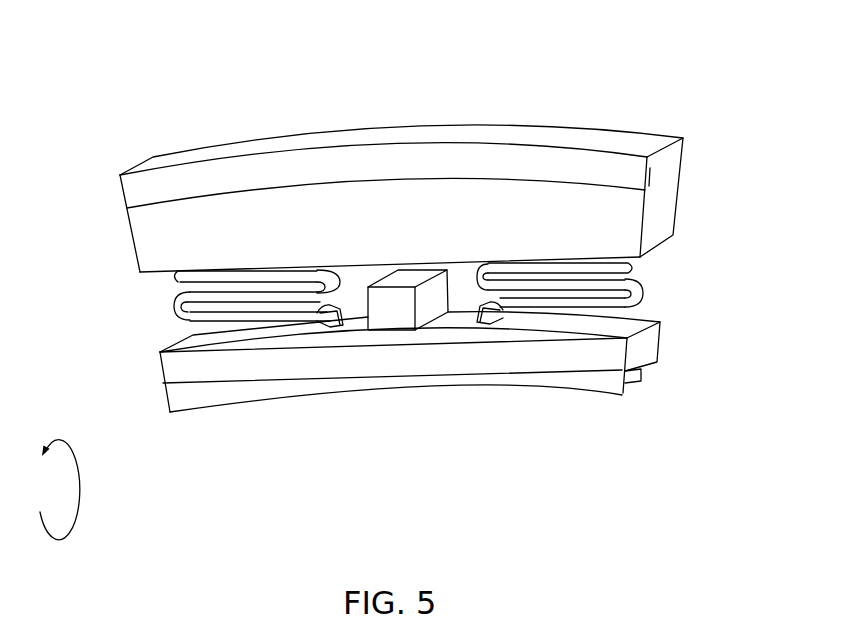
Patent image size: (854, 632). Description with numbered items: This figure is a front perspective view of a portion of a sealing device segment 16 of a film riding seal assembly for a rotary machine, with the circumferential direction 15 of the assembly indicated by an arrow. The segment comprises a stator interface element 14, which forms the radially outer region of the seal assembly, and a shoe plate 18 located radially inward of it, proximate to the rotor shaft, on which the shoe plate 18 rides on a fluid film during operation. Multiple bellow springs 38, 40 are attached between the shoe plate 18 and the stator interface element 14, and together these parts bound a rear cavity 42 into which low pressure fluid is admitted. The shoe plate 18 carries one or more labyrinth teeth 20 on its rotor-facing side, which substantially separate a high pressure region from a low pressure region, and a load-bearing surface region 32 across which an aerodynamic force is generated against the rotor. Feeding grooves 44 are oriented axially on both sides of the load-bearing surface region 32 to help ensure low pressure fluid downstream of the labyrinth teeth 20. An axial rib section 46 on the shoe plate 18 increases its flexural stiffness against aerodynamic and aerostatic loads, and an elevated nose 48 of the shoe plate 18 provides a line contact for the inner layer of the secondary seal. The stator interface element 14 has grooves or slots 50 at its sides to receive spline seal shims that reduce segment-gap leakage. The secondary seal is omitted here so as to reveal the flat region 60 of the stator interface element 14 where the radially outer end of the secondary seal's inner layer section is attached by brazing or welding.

The stator interface element 14 is at (186, 155).
The circumferential direction 15 is at (78, 525).
The sealing device segment 16 is at (645, 47).
The shoe plate 18 is at (654, 333).
The labyrinth teeth 20 is at (207, 395).
The load-bearing surface region 32 is at (627, 380).
The bellow spring 38 is at (532, 303).
The bellow spring 40 is at (242, 292).
The rear cavity 42 is at (464, 280).
The feeding grooves 44 is at (648, 374).
The axial rib section 46 is at (393, 293).
The elevated nose 48 is at (167, 366).
The grooves or slots 50 is at (646, 200).
The flat region 60 is at (137, 238).